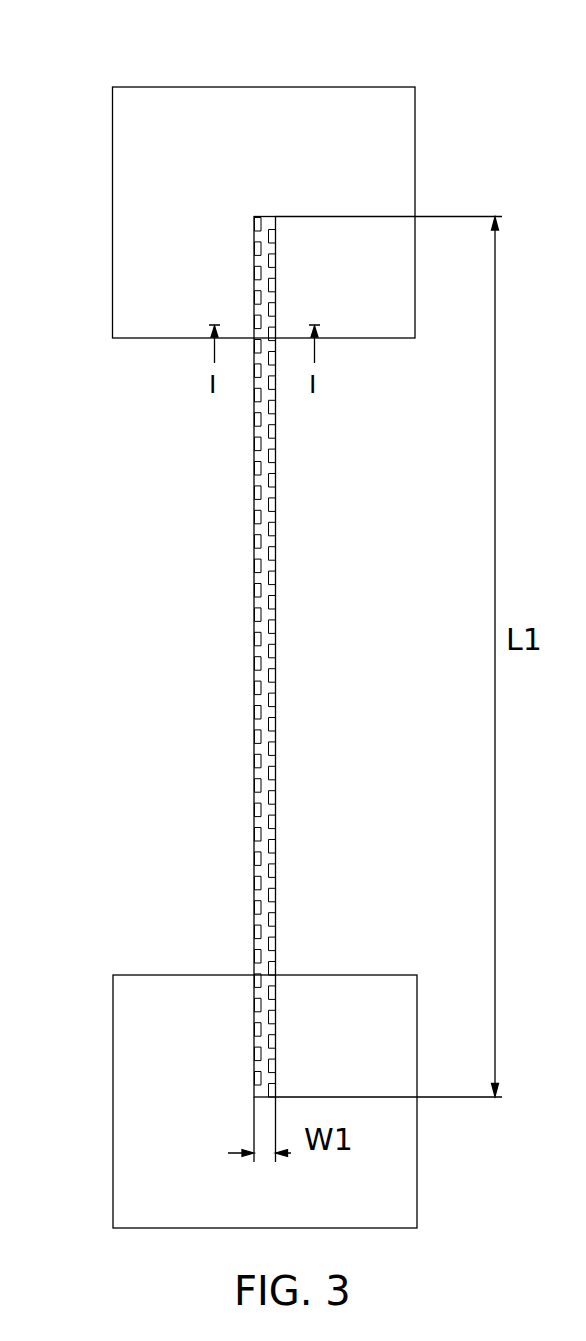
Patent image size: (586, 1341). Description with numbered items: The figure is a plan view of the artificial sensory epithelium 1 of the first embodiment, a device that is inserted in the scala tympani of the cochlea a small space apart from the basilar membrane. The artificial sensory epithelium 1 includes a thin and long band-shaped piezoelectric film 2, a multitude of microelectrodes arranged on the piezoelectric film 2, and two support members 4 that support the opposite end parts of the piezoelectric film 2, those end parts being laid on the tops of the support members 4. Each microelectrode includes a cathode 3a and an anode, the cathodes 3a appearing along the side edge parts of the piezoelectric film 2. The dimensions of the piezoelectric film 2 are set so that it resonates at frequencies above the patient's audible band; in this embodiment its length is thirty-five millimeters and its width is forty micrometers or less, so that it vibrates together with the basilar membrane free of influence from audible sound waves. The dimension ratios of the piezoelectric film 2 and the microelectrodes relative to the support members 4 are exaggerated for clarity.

The artificial sensory epithelium 1 is at (472, 88).
The piezoelectric film 2 is at (276, 467).
The cathode 3a is at (276, 553).
The support member 4 is at (112, 213).